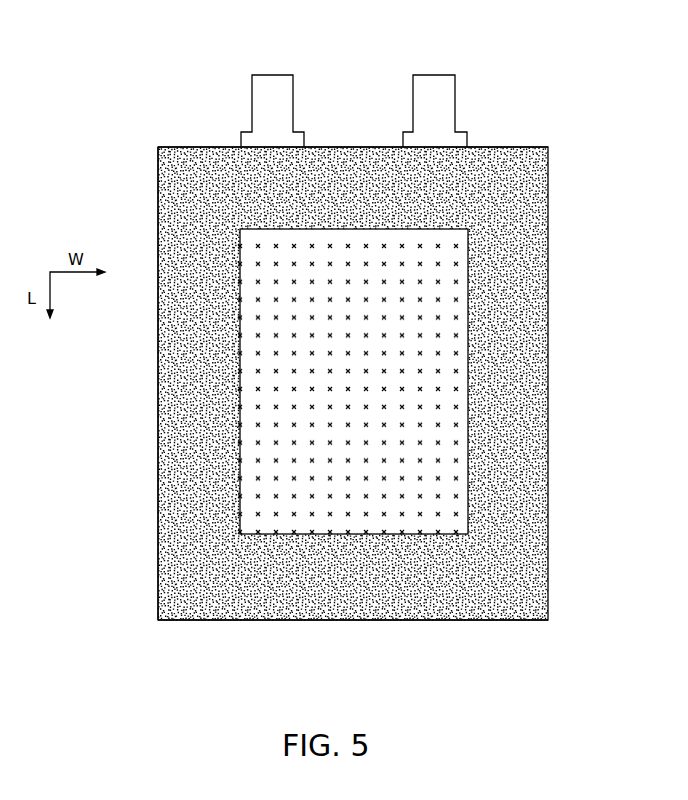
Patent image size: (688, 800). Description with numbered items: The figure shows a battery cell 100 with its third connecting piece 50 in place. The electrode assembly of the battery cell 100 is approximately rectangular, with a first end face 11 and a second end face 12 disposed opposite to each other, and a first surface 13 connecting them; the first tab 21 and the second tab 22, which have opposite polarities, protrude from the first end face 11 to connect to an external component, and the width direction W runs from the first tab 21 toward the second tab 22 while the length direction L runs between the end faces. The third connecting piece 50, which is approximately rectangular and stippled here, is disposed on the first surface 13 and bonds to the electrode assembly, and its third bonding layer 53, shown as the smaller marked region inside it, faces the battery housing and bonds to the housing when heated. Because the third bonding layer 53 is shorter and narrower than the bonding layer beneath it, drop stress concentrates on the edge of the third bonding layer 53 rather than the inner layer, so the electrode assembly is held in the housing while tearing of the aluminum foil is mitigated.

The battery cell 100 is at (225, 26).
The first end face 11 is at (188, 147).
The second end face 12 is at (188, 622).
The first surface 13 is at (157, 190).
The first tab 21 is at (279, 78).
The second tab 22 is at (440, 88).
The third connecting piece 50 is at (172, 403).
The third bonding layer 53 is at (450, 365).